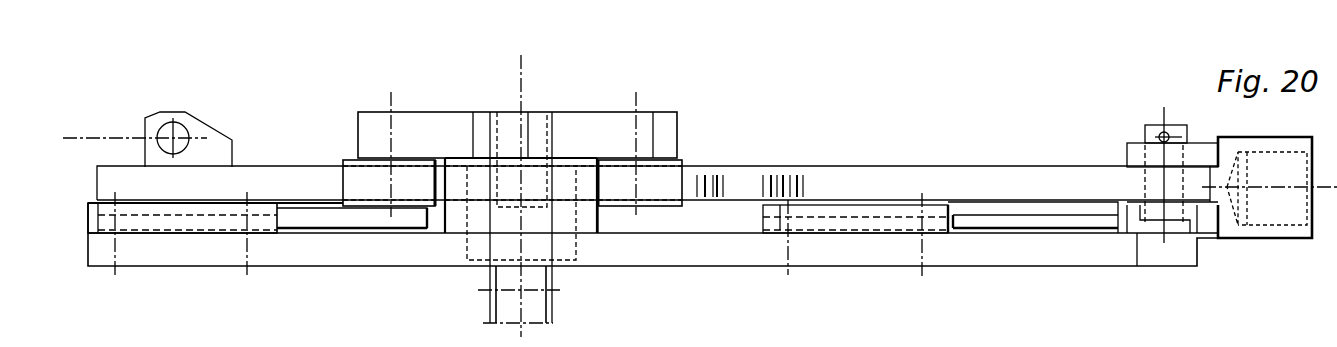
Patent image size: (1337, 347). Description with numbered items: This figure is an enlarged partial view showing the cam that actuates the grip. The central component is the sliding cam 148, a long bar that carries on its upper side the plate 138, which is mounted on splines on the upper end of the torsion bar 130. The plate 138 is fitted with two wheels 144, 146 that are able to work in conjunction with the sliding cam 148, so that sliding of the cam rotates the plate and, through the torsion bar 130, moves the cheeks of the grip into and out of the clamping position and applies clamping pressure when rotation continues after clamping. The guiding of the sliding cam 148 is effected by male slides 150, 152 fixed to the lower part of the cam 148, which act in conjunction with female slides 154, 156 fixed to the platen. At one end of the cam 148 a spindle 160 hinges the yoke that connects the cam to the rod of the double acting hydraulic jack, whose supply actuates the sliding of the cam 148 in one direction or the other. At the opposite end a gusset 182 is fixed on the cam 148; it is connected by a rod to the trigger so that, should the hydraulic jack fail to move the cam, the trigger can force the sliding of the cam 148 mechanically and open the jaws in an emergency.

The torsion bar 130 is at (540, 307).
The plate 138 is at (622, 135).
The wheel 144 is at (350, 170).
The wheel 146 is at (665, 180).
The sliding cam 148 is at (983, 175).
The male slide 150 is at (1030, 220).
The male slide 152 is at (313, 222).
The female slide 154 is at (850, 222).
The female slide 156 is at (205, 222).
The spindle 160 is at (1147, 132).
The gusset 182 is at (155, 125).